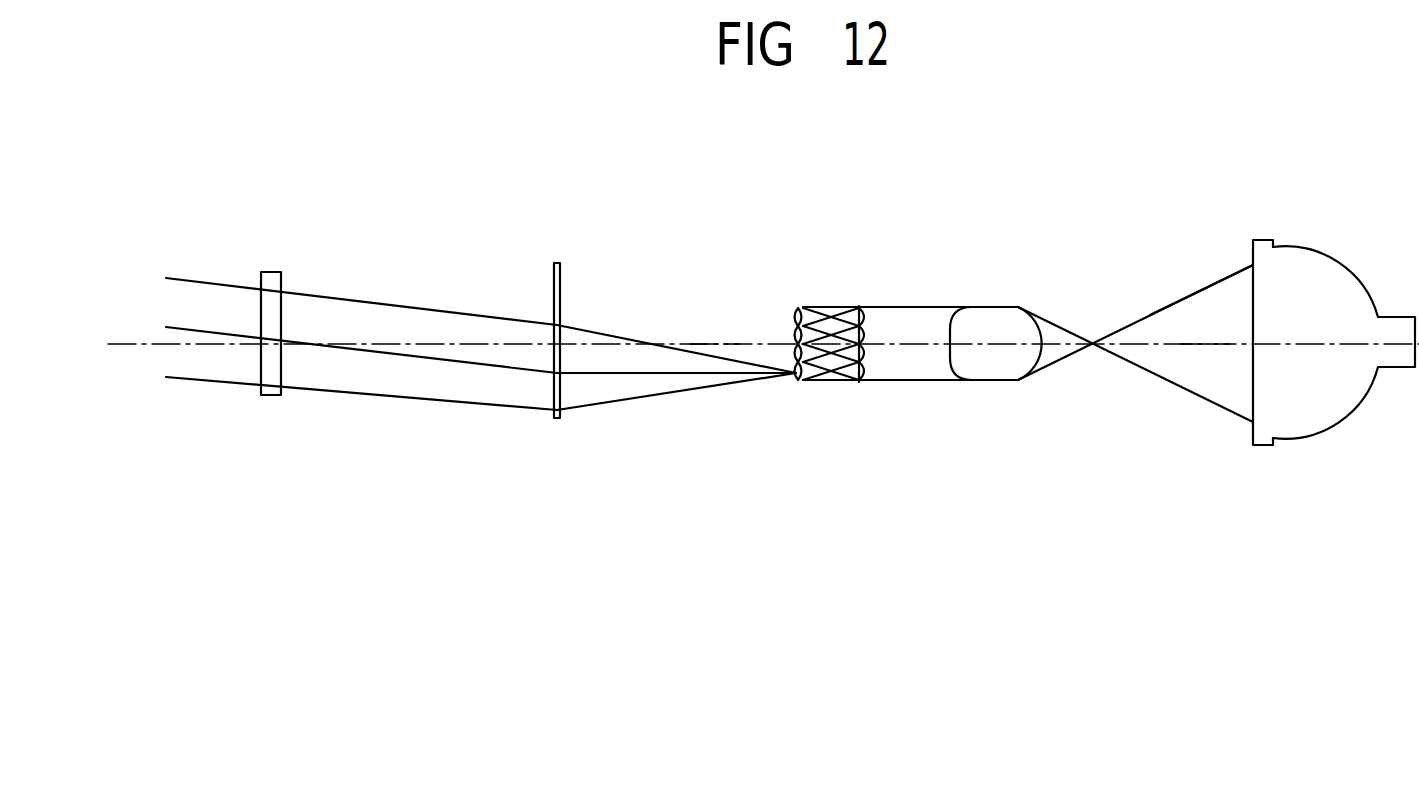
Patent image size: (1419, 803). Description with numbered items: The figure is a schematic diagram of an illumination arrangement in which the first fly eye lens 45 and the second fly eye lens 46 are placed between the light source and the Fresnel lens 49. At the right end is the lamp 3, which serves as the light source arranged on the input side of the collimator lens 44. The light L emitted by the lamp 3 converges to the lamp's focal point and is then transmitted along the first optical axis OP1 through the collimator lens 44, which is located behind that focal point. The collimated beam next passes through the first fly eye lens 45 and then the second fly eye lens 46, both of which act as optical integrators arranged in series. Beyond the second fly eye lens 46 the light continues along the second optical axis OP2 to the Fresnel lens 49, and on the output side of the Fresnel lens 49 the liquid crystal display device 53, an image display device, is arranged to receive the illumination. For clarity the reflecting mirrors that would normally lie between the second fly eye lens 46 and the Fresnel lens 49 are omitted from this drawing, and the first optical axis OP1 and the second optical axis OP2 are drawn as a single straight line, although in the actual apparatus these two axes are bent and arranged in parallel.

The liquid crystal display device 53 is at (273, 396).
The Fresnel lens 49 is at (557, 262).
The second optical axis OP2 is at (710, 345).
The second fly eye lens 46 is at (798, 305).
The first fly eye lens 45 is at (864, 305).
The collimator lens 44 is at (993, 372).
The first optical axis OP1 is at (1202, 342).
The light L is at (1192, 375).
The lamp 3 is at (1328, 393).